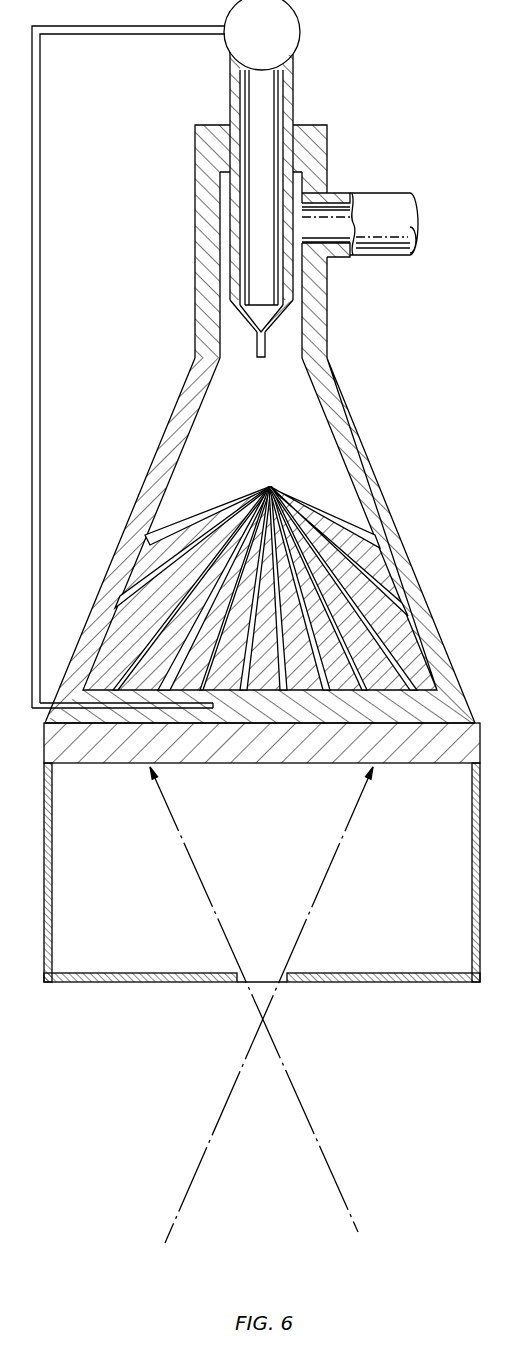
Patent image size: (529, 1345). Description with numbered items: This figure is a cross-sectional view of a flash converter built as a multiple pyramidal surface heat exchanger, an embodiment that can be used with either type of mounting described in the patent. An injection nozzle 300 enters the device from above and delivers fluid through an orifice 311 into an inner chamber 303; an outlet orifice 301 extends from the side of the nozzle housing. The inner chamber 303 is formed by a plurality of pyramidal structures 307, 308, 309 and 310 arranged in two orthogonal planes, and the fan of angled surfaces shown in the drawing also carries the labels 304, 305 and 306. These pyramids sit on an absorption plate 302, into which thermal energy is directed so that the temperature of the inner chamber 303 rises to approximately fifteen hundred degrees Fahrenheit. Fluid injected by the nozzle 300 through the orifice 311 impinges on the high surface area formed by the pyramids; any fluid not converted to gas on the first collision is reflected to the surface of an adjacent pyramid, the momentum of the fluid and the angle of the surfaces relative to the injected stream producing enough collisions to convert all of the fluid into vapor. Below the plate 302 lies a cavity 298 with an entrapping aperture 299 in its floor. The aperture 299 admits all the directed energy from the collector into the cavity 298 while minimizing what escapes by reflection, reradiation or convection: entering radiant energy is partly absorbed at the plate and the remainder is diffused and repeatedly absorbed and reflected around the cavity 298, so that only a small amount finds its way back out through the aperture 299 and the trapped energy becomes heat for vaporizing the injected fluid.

The cavity 298 is at (85, 952).
The entrapping aperture 299 is at (240, 977).
The injection nozzle 300 is at (265, 106).
The outlet orifice 301 is at (380, 193).
The absorption plate 302 is at (402, 763).
The inner chamber 303 is at (285, 441).
The stream 304 is at (382, 673).
The stream 305 is at (347, 675).
The stream 306 is at (300, 677).
The pyramidal structure 307 is at (407, 671).
The pyramidal structure 308 is at (285, 489).
The pyramidal structure 309 is at (278, 488).
The pyramidal structure 310 is at (268, 487).
The orifice 311 is at (259, 358).